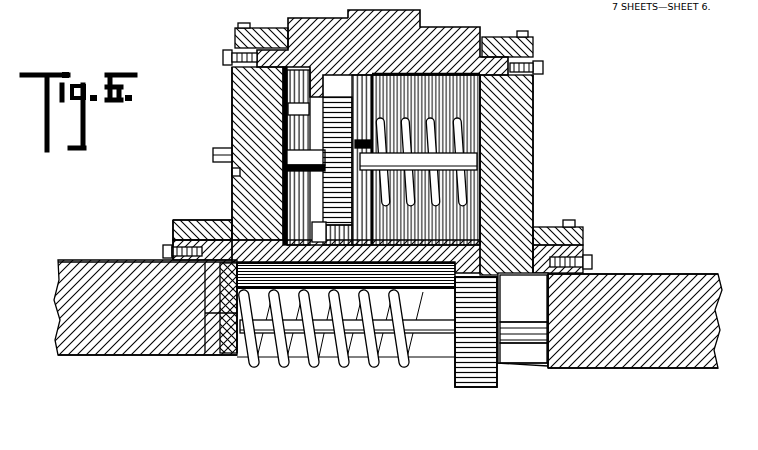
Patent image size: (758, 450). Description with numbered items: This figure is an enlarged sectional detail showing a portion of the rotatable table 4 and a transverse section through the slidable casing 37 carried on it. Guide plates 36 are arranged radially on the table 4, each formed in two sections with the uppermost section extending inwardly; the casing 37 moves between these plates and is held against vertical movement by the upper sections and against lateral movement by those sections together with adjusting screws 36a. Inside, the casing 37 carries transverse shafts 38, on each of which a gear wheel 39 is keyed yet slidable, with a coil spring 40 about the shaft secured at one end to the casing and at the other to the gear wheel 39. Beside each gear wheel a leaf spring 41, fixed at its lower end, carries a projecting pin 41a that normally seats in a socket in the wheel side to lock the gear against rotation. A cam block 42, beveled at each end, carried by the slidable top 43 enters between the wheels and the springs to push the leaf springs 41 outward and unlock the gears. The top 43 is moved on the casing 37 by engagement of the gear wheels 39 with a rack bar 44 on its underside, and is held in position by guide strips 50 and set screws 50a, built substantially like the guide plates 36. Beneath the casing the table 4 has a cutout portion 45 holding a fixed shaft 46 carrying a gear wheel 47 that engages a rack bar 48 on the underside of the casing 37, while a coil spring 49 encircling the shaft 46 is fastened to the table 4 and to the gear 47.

The table 4 is at (95, 263).
The guide plates 36 is at (585, 249).
The adjusting screws 36a is at (592, 261).
The slidable casing 37 is at (218, 150).
The transverse shafts 38 is at (232, 172).
The gear wheel 39 is at (297, 188).
The coil spring 40 is at (460, 140).
The leaf spring 41 is at (233, 124).
The projecting pin 41a is at (235, 102).
The cam block 42 is at (233, 85).
The slidable top 43 is at (330, 13).
The rack bar 44 is at (413, 73).
The cutout portion 45 is at (503, 377).
The fixed shaft 46 is at (305, 360).
The gear wheel 47 is at (467, 377).
The rack bar 48 is at (513, 260).
The coil spring 49 is at (257, 347).
The guide strips 50 is at (233, 40).
The set screws 50a is at (223, 58).